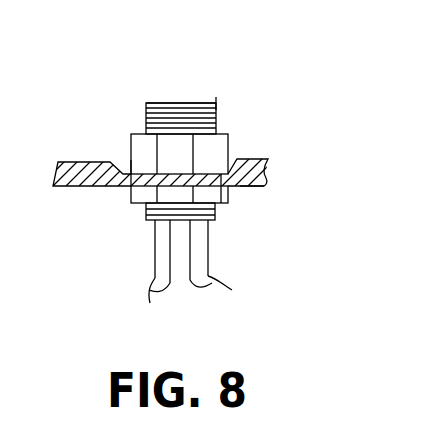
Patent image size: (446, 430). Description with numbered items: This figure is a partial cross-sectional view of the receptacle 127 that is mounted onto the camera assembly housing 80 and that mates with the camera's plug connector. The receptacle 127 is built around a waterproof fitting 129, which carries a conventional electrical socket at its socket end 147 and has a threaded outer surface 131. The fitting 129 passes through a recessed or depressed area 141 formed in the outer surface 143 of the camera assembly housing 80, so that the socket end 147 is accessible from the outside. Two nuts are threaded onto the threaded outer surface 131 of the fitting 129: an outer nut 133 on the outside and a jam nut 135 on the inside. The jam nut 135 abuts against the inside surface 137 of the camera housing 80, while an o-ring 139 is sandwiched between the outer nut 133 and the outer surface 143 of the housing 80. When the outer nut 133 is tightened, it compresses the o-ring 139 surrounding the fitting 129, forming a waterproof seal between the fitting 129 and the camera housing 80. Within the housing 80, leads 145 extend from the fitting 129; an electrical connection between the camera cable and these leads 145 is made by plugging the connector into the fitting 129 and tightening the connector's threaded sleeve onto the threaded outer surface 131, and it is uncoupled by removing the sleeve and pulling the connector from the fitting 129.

The camera assembly housing 80 is at (168, 158).
The receptacle 127 is at (238, 98).
The waterproof fitting 129 is at (216, 212).
The threaded outer surface 131 is at (193, 90).
The outer nut 133 is at (230, 142).
The jam nut 135 is at (131, 190).
The inside surface 137 is at (258, 188).
The o-ring 139 is at (130, 160).
The recessed area 141 is at (238, 160).
The outer surface 143 is at (62, 162).
The leads 145 is at (200, 276).
The socket end 147 is at (203, 103).